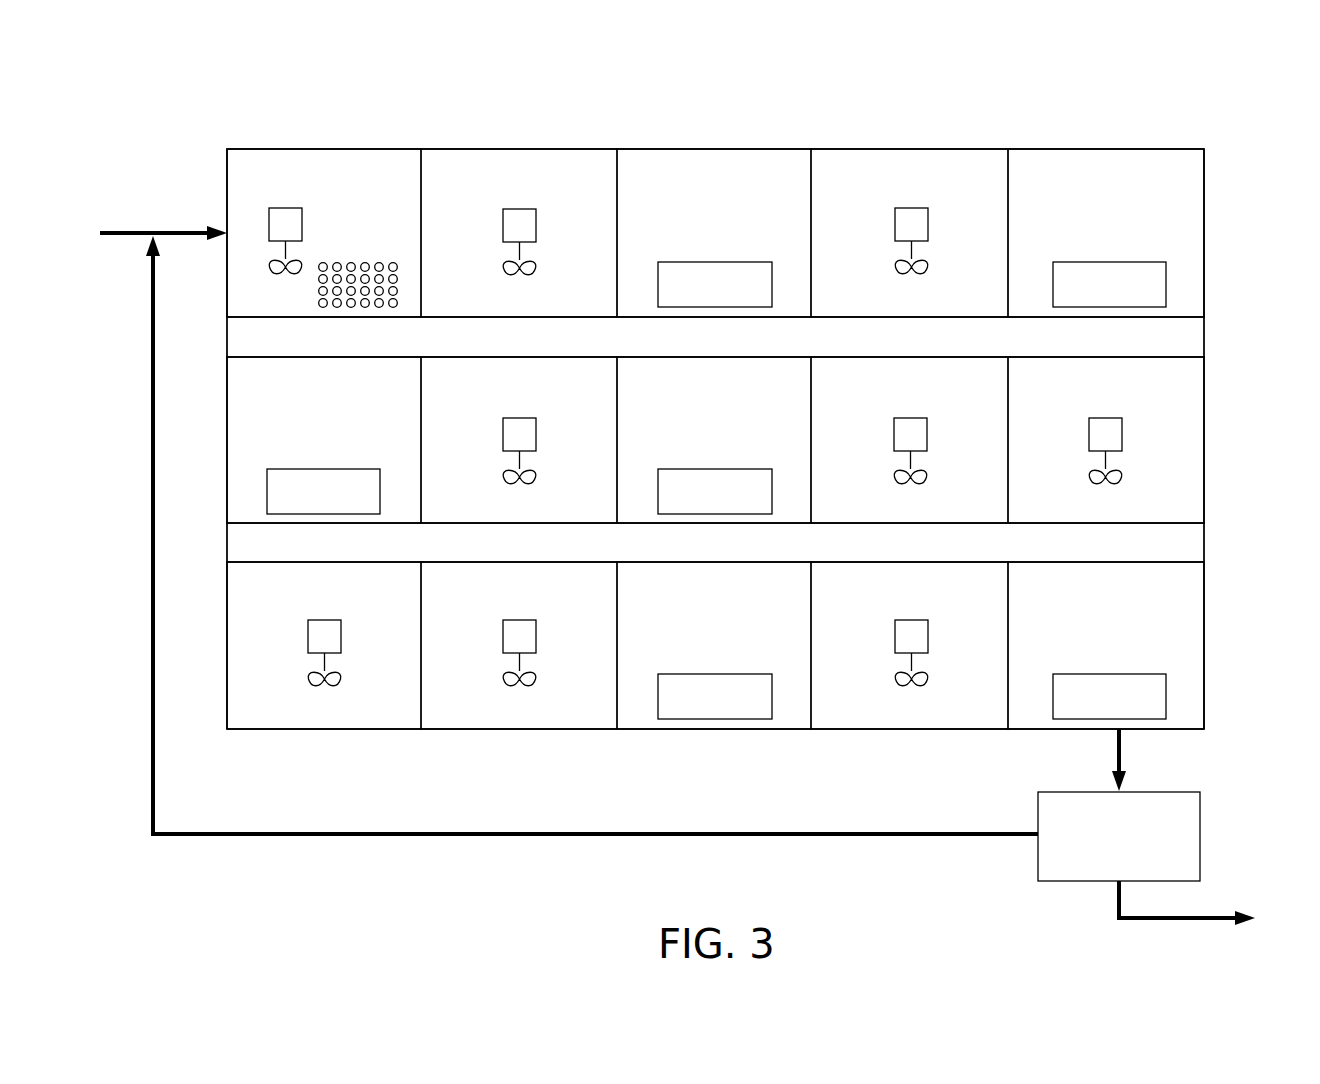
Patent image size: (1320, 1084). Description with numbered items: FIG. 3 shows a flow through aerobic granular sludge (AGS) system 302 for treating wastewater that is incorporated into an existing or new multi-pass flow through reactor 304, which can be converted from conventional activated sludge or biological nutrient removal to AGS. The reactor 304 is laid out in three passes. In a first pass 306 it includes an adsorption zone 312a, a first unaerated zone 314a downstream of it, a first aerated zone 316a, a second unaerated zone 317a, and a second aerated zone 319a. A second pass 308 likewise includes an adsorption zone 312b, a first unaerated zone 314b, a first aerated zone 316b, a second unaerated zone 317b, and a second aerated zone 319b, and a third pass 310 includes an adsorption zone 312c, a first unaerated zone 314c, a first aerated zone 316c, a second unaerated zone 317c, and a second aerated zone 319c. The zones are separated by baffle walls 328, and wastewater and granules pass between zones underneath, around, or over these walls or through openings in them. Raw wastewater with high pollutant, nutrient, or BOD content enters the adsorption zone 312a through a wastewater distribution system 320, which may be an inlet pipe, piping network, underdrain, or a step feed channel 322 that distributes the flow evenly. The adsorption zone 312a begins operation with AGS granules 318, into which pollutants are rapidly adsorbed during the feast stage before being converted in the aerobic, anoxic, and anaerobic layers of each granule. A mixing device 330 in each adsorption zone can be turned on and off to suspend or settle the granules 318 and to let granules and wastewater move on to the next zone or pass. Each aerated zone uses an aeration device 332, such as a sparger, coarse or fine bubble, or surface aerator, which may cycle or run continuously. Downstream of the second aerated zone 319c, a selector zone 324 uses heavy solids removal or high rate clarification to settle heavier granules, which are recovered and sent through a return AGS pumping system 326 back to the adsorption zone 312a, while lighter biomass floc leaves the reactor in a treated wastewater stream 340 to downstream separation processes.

The flow through aerobic granular sludge (AGS) system 302 is at (921, 108).
The multi-pass flow through reactor 304 is at (1207, 145).
The first pass 306 is at (1210, 232).
The second pass 308 is at (1212, 417).
The third pass 310 is at (1210, 655).
The adsorption zone 312a is at (294, 186).
The first unaerated zone 314a is at (502, 186).
The first aerated zone 316a is at (686, 186).
The second unaerated zone 317a is at (896, 186).
The second aerated zone 319a is at (1076, 186).
The second aerated zone 319b is at (294, 394).
The second unaerated zone 317b is at (502, 394).
The first aerated zone 316b is at (686, 394).
The first unaerated zone 314b is at (896, 394).
The adsorption zone 312b is at (1076, 394).
The adsorption zone 312c is at (294, 599).
The first unaerated zone 314c is at (502, 599).
The first aerated zone 316c is at (686, 599).
The second unaerated zone 317c is at (896, 599).
The second aerated zone 319c is at (1076, 599).
The AGS granules 318 is at (310, 287).
The wastewater distribution system 320 is at (140, 231).
The step feed channel 322 is at (1210, 337).
The selector zone 324 is at (1096, 849).
The return AGS pumping system 326 is at (427, 845).
The baffle walls 328 is at (620, 182).
The mixing device 330 is at (266, 213).
The aeration device 332 is at (692, 296).
The treated wastewater stream 340 is at (1196, 917).